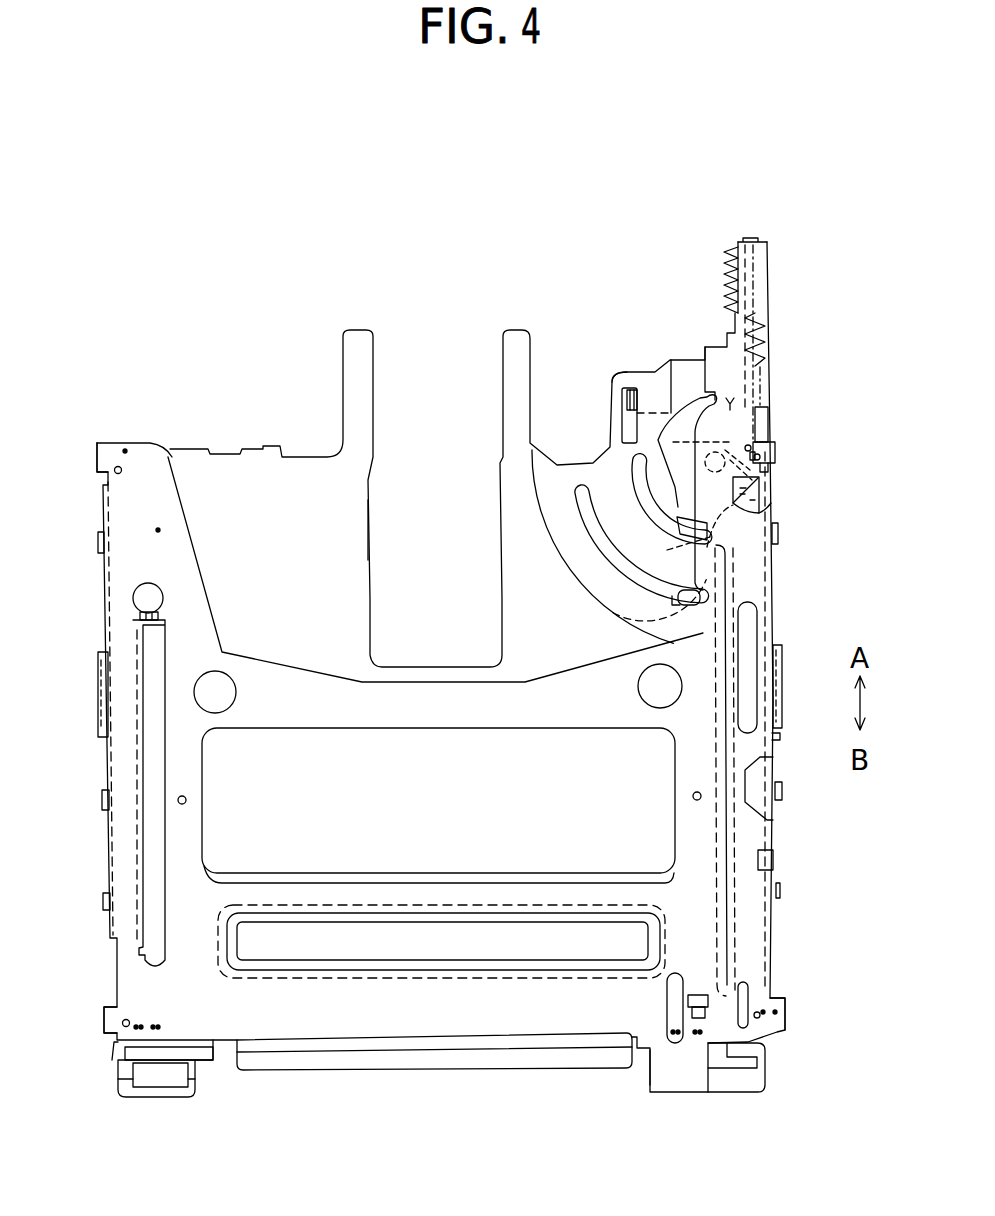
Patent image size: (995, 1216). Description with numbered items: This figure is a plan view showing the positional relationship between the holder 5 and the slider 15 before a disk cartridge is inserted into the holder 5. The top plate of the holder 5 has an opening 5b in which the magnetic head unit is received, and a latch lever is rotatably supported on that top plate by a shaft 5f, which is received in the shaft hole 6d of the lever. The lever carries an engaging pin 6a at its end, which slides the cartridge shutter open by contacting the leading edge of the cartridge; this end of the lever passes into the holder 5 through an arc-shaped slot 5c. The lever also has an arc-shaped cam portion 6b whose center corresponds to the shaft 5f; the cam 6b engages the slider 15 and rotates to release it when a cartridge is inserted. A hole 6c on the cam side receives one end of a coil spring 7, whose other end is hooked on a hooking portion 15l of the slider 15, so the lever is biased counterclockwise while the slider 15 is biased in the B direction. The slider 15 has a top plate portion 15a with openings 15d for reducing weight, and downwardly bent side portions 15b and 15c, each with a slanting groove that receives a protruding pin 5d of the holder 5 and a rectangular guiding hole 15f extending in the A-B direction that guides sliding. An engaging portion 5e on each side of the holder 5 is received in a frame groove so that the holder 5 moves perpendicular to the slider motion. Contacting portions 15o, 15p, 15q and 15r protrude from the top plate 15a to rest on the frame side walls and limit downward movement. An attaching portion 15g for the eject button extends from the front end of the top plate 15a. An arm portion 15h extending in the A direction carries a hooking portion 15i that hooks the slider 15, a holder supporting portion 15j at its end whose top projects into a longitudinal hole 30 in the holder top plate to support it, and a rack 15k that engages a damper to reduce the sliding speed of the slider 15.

The holder 5 is at (240, 443).
The opening 5b is at (372, 525).
The arc-shaped slot 5c is at (636, 482).
The protruding pins 5d is at (100, 545).
The engaging portion 5e is at (104, 808).
The shaft 5f is at (770, 488).
The engaging pin 6a is at (722, 486).
The arc-shaped cam portion 6b is at (772, 402).
The hole or opening 6c is at (775, 452).
The shaft hole 6d is at (815, 495).
The coil spring 7 is at (772, 357).
The slider 15 is at (380, 1070).
The top plate portion 15a is at (493, 1020).
The side portion 15b is at (106, 752).
The side portion 15c is at (775, 745).
The openings 15d is at (278, 752).
The guiding hole 15f is at (100, 680).
The attaching portion 15g is at (688, 1077).
The arm portion 15h is at (740, 570).
The hooking portion 15i is at (705, 352).
The holder supporting portion 15j is at (614, 388).
The rack 15k is at (722, 290).
The hooking portion 15l is at (754, 238).
The contacting portion 15o is at (108, 1022).
The contacting portion 15p is at (97, 462).
The contacting portion 15q is at (785, 1015).
The contacting portion 15r is at (775, 457).
The longitudinal hole 30 is at (622, 428).